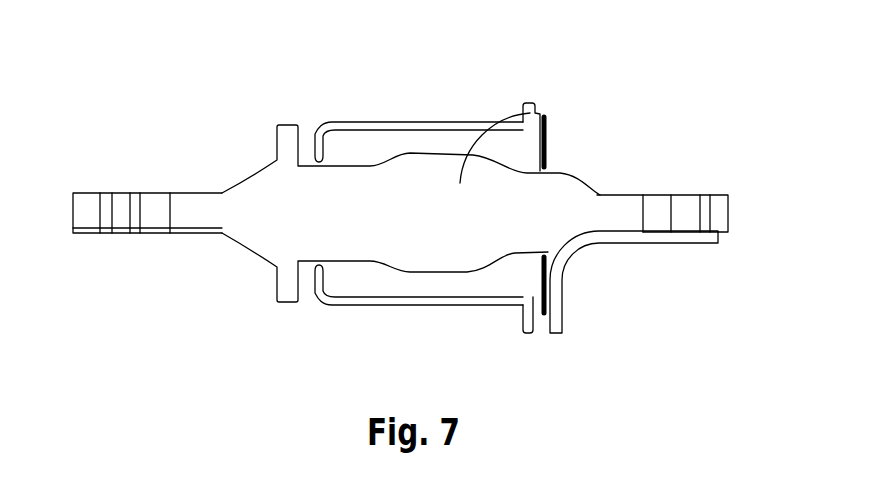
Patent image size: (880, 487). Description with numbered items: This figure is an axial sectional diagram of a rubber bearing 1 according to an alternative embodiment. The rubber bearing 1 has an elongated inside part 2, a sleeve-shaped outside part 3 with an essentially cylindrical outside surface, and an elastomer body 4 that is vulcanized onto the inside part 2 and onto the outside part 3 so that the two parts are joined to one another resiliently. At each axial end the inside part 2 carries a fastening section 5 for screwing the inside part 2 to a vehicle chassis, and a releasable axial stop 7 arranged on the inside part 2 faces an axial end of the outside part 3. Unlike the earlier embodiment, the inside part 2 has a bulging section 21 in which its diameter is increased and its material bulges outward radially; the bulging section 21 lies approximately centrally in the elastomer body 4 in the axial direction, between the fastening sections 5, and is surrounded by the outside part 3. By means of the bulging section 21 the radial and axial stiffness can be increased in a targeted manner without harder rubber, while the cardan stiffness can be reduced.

The rubber bearing 1 is at (123, 80).
The inside part 2 is at (248, 236).
The outside part 3 is at (379, 118).
The elastomer body 4 is at (365, 280).
The fastening section 5 is at (127, 187).
The releasable axial stop 7 is at (572, 258).
The bulging section 21 is at (533, 113).